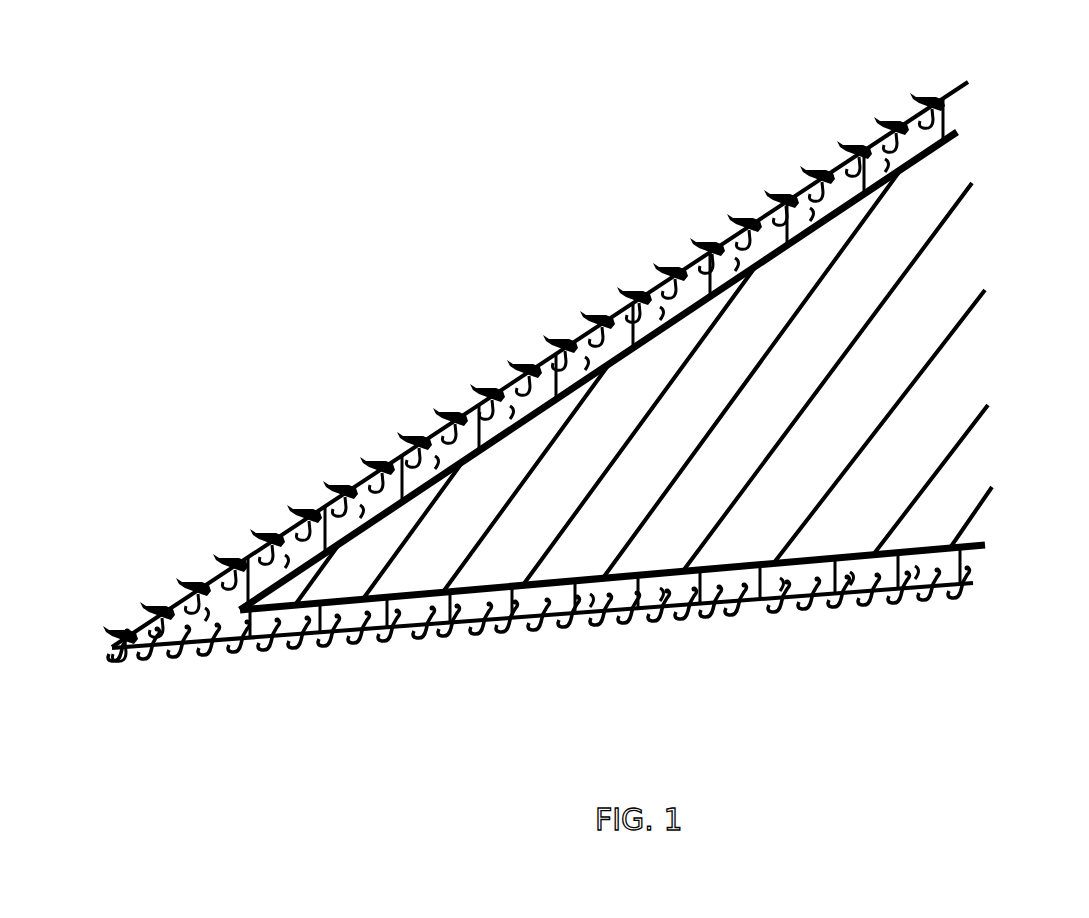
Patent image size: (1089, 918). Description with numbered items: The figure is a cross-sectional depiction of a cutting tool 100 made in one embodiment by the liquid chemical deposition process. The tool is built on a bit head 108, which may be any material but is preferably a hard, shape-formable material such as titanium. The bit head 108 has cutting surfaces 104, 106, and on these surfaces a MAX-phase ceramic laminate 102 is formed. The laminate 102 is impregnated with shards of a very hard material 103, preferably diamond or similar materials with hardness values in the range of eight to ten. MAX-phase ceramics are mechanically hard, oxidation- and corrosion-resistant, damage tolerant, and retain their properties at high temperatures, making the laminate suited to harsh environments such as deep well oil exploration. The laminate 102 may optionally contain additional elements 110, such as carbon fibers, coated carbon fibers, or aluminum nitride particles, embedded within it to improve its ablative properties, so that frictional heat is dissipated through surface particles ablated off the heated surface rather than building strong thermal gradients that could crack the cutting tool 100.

The cutting tool 100 is at (906, 722).
The MAX-phase ceramic laminate 102 is at (602, 635).
The shards of very hard material 103 is at (737, 627).
The cutting surface 104 is at (355, 608).
The cutting surface 106 is at (805, 208).
The bit head 108 is at (898, 418).
The additional elements 110 is at (508, 622).